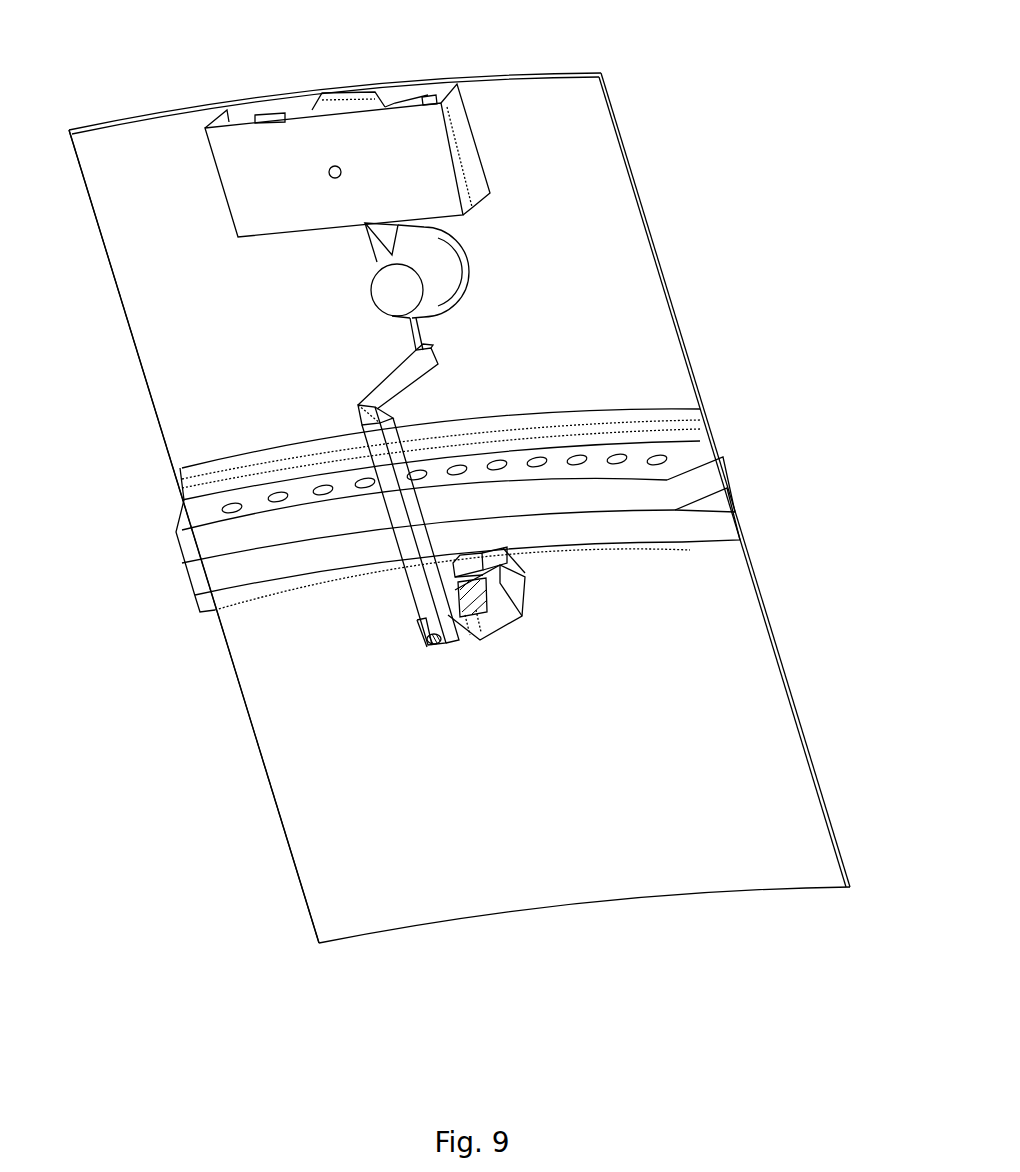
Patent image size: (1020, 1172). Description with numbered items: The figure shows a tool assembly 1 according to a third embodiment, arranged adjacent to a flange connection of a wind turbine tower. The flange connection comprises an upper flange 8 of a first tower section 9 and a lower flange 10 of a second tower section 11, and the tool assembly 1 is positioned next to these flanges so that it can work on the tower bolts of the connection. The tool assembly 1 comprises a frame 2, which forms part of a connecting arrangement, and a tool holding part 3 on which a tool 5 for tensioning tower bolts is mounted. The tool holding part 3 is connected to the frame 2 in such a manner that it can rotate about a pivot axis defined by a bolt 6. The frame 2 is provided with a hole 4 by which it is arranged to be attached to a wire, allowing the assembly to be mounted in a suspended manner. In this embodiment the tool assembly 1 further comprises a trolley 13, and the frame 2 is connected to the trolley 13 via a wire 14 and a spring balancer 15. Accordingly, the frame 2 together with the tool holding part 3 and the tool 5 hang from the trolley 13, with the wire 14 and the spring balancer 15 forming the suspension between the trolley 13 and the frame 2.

The tool assembly 1 is at (683, 207).
The frame 2 is at (410, 553).
The tool holding part 3 is at (493, 608).
The hole 4 is at (425, 350).
The tool 5 is at (495, 558).
The bolt 6 is at (437, 643).
The upper flange 8 is at (697, 513).
The first tower section 9 is at (738, 687).
The lower flange 10 is at (675, 462).
The second tower section 11 is at (585, 153).
The trolley 13 is at (380, 125).
The wire 14 is at (413, 333).
The spring balancer 15 is at (428, 270).